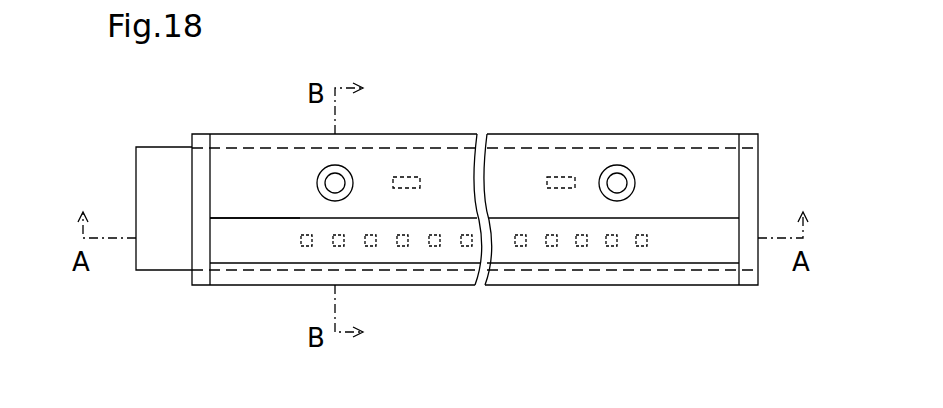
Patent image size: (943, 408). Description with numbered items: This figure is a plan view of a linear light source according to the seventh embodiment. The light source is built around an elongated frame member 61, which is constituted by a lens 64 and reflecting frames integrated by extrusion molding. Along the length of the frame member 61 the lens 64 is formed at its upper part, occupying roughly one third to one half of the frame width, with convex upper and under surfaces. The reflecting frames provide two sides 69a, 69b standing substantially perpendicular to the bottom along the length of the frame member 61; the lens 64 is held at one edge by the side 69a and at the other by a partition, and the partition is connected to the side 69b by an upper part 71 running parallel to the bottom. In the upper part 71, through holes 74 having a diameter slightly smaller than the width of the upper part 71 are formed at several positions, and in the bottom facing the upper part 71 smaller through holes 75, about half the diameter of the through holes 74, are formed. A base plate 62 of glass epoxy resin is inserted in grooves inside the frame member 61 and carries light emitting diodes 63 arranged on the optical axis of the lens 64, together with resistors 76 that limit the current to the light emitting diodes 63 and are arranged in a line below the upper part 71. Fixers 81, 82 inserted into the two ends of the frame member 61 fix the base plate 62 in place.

The frame member 61 is at (658, 290).
The base plate 62 is at (162, 245).
The light emitting diodes 63 is at (372, 246).
The lens 64 is at (535, 249).
The side 69a is at (596, 287).
The side 69b is at (522, 132).
The upper part 71 is at (243, 182).
The through holes 74 is at (318, 178).
The through holes 75 is at (349, 171).
The resistors 76 is at (561, 177).
The fixer 81 is at (200, 178).
The fixer 82 is at (748, 175).